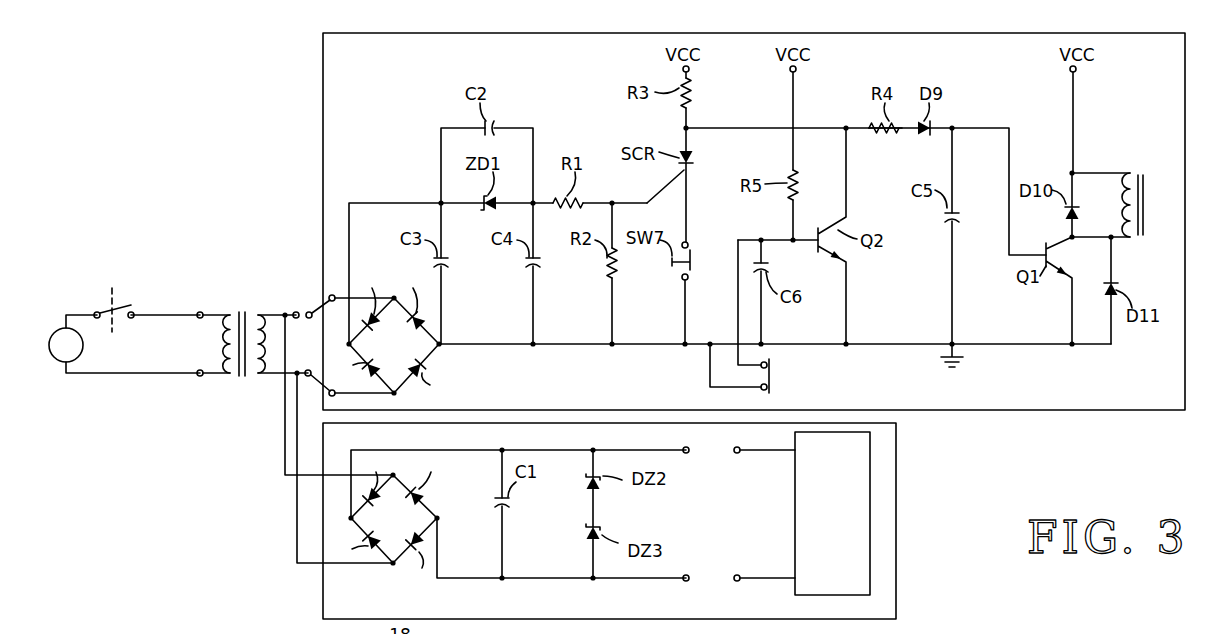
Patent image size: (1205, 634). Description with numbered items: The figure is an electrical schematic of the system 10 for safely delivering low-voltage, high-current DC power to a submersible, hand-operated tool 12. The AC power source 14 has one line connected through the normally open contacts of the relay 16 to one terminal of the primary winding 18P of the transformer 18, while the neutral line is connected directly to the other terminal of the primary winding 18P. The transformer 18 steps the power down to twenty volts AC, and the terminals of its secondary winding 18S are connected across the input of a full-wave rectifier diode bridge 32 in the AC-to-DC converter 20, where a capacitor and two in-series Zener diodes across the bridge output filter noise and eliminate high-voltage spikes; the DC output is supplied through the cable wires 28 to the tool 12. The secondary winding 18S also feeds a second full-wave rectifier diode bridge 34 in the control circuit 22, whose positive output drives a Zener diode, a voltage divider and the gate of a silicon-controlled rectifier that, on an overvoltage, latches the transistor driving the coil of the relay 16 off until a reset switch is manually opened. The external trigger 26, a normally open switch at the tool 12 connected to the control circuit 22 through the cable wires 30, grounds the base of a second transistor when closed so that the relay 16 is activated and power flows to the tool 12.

The system 10 is at (250, 157).
The tool 12 is at (872, 483).
The AC power source 14 is at (56, 330).
The relay 16 is at (131, 306).
The transformer 18 is at (237, 346).
The primary winding 18P is at (219, 343).
The secondary winding 18S is at (259, 376).
The AC-to-DC converter 20 is at (322, 598).
The control circuit 22 is at (322, 182).
The external trigger 26 is at (773, 372).
The cable wires 28 is at (722, 452).
The cable wires 30 is at (736, 356).
The full-wave rectifier diode bridge 32 is at (385, 574).
The second full-wave rectifier diode bridge 34 is at (446, 366).